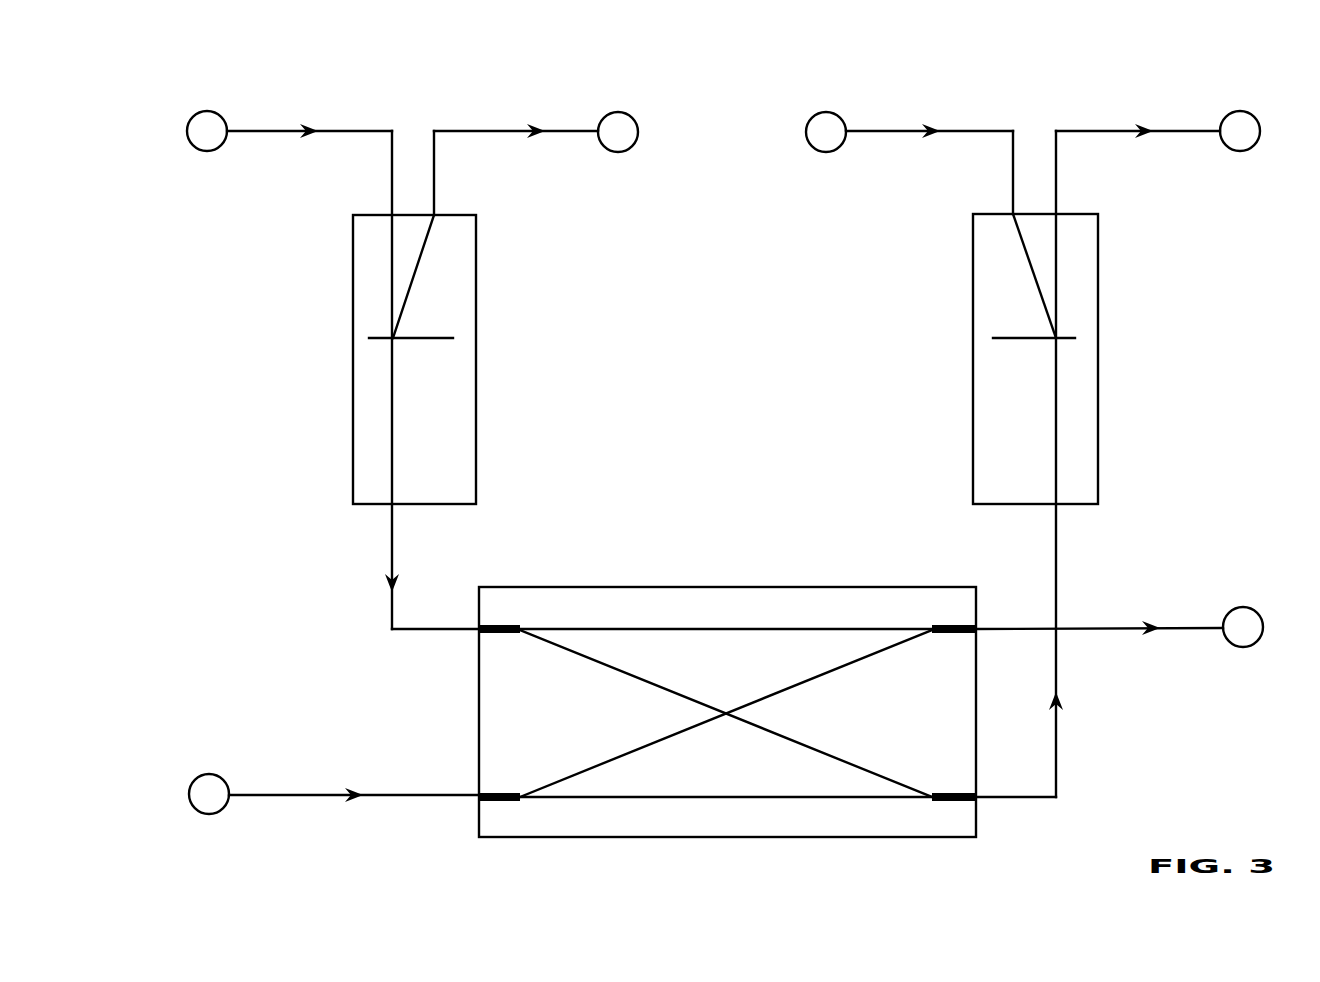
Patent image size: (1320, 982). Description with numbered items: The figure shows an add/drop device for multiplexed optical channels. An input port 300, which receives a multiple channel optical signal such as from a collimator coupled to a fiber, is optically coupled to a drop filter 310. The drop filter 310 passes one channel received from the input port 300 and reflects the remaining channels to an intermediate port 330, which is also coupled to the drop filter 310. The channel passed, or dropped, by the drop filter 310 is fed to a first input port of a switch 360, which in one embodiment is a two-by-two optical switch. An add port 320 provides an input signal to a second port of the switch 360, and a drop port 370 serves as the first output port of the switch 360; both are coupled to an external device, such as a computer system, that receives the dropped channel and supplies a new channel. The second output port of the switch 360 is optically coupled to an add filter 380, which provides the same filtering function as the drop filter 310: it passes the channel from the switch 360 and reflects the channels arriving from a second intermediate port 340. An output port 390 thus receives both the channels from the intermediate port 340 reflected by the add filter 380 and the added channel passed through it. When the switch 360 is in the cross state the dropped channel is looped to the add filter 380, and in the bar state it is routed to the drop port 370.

The input port 300 is at (267, 102).
The drop filter 310 is at (353, 340).
The add port 320 is at (316, 764).
The intermediate port 330 is at (567, 102).
The intermediate port 340 is at (880, 102).
The switch 360 is at (718, 587).
The drop port 370 is at (1144, 660).
The add filter 380 is at (1098, 340).
The output port 390 is at (1187, 102).